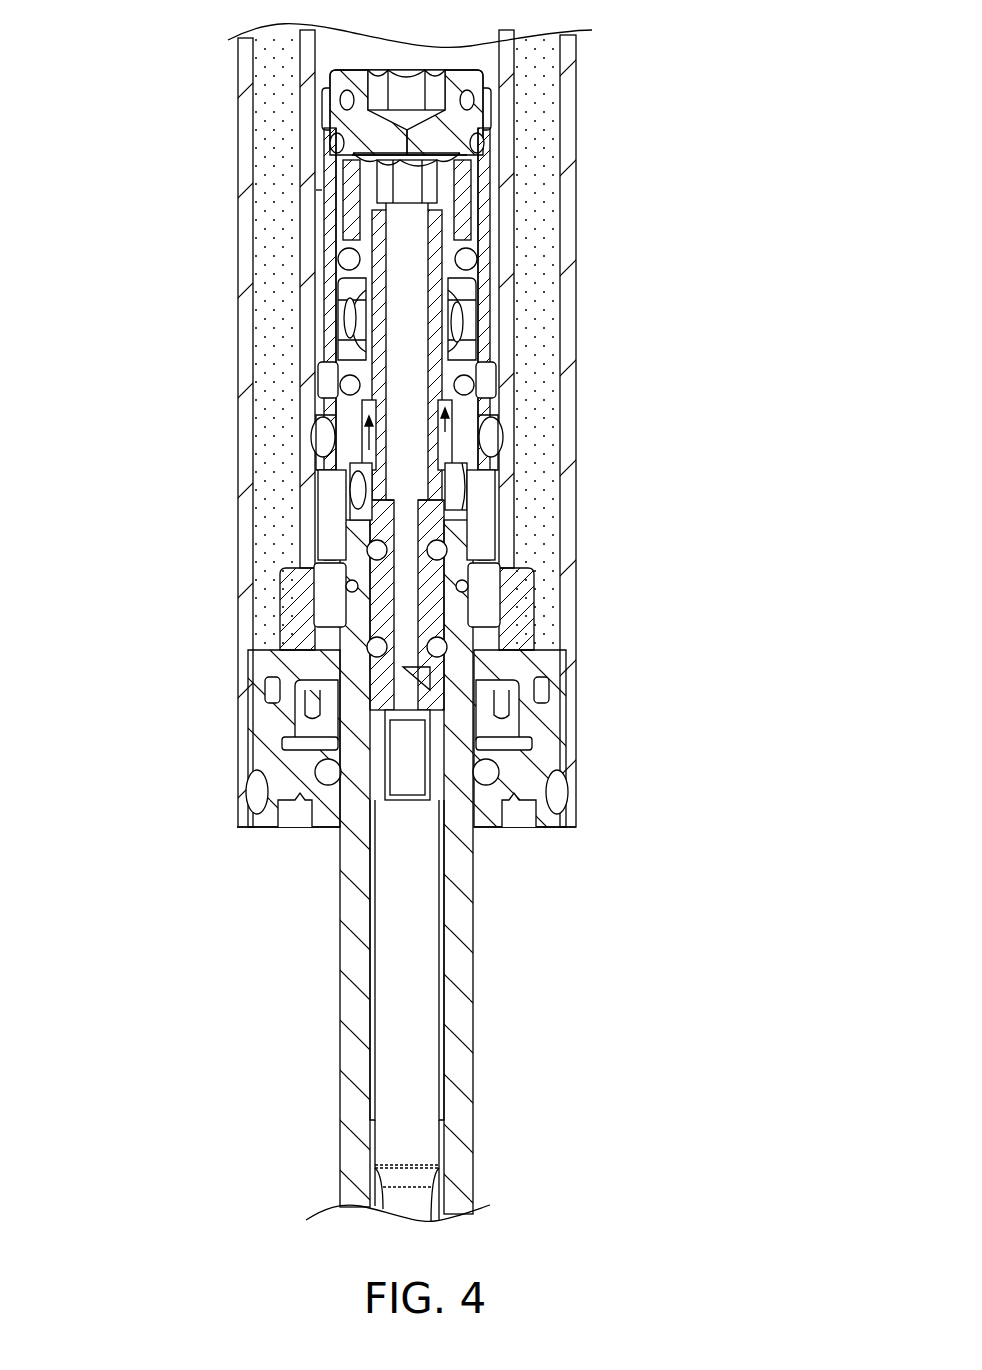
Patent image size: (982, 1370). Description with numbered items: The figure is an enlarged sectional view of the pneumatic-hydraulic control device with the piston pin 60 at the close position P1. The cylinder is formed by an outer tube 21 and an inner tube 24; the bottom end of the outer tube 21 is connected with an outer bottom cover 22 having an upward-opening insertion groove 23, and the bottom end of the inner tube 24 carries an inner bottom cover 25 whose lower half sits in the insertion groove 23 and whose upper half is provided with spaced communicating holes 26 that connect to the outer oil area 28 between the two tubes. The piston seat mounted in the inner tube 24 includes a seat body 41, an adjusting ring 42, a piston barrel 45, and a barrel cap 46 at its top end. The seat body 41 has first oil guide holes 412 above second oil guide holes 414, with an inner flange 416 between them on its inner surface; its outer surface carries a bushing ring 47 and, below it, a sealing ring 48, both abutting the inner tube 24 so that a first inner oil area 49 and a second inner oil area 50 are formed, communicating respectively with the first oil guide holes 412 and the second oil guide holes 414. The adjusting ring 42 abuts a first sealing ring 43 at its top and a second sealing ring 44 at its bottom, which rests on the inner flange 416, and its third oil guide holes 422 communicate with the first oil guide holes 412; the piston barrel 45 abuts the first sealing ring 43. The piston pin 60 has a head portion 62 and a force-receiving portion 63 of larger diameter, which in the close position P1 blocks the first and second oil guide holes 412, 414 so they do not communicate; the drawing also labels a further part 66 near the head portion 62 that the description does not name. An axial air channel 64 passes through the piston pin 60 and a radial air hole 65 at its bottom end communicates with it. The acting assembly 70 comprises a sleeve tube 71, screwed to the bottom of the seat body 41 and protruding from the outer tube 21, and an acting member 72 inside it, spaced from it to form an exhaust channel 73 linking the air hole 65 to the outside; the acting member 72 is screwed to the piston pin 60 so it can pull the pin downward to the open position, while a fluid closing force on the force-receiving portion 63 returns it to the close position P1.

The outer tube 21 is at (245, 62).
The outer bottom cover 22 is at (270, 742).
The insertion groove 23 is at (282, 730).
The inner tube 24 is at (305, 125).
The inner bottom cover 25 is at (290, 620).
The communicating holes 26 is at (520, 636).
The outer oil area 28 is at (542, 388).
The seat body 41 is at (332, 292).
The adjusting ring 42 is at (468, 282).
The first sealing ring 43 is at (467, 262).
The second sealing ring 44 is at (465, 387).
The piston barrel 45 is at (480, 120).
The barrel cap 46 is at (466, 77).
The bushing ring 47 is at (322, 380).
The sealing ring 48 is at (323, 437).
The first inner oil area 49 is at (427, 62).
The second inner oil area 50 is at (497, 533).
The piston pin 60 is at (362, 443).
The head portion 62 is at (440, 215).
The force-receiving portion 63 is at (493, 435).
The axial air channel 64 is at (410, 487).
The air hole 65 is at (428, 682).
The nut 66 is at (445, 190).
The acting assembly 70 is at (565, 1062).
The sleeve tube 71 is at (465, 1077).
The acting member 72 is at (420, 1140).
The exhaust channel 73 is at (450, 850).
The first oil guide holes 412 is at (480, 322).
The second oil guide holes 414 is at (478, 512).
The inner flange 416 is at (482, 418).
The third oil guide holes 422 is at (457, 328).
The close position P1 is at (358, 190).